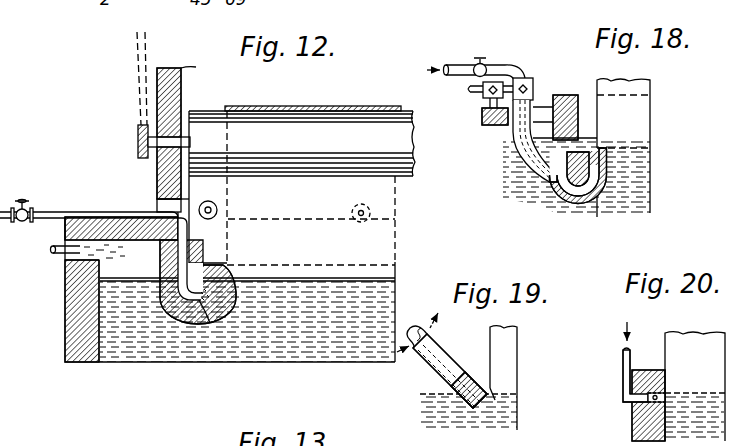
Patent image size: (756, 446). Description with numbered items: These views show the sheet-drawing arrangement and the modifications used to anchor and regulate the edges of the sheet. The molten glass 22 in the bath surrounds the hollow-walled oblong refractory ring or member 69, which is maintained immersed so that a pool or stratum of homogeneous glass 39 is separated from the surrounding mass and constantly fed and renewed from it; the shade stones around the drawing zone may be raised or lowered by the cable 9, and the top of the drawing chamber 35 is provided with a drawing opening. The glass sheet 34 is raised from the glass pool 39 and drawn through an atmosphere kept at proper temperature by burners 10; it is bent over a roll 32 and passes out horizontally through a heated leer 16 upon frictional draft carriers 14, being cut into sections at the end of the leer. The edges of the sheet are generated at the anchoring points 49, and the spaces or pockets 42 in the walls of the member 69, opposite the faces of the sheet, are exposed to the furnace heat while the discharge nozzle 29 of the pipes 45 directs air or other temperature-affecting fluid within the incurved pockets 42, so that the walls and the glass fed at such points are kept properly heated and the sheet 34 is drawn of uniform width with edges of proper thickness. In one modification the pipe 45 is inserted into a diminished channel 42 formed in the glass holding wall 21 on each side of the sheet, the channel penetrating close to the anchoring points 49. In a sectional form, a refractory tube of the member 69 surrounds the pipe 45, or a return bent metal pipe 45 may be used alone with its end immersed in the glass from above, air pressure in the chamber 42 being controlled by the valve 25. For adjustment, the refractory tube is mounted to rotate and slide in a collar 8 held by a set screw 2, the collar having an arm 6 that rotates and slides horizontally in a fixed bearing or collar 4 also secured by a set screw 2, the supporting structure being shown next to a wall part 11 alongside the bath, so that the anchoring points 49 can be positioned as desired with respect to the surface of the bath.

In FIG. 18, the set screw 2 is at (538, 62).
In FIG. 18, the fixed bearing or collar 4 is at (483, 98).
In FIG. 18, the arm 6 is at (471, 88).
In FIG. 18, the collar 8 is at (507, 77).
In FIG. 18, the cable 9 is at (563, 95).
In FIG. 12, the burners 10 is at (372, 213).
In FIG. 18, the support wall 11 is at (575, 95).
In FIG. 12, the frictional draft carrier 14 is at (52, 252).
In FIG. 12, the leer 16 is at (183, 86).
In FIG. 12, the glass holding wall 21 is at (68, 328).
In FIG. 20, the glass holding wall 21 is at (628, 405).
In FIG. 12, the molten glass 22 is at (383, 290).
In FIG. 18, the molten glass 22 is at (530, 168).
In FIG. 19, the molten glass 22 is at (517, 419).
In FIG. 12, the valve 25 is at (23, 201).
In FIG. 18, the valve 25 is at (479, 57).
In FIG. 12, the discharge nozzle 29 is at (190, 320).
In FIG. 12, the roll 32 is at (364, 120).
In FIG. 12, the glass sheet 34 is at (389, 187).
In FIG. 18, the glass sheet 34 is at (642, 112).
In FIG. 19, the glass sheet 34 is at (520, 377).
In FIG. 20, the glass sheet 34 is at (732, 325).
In FIG. 12, the top of the drawing chamber 35 is at (65, 229).
In FIG. 18, the top of the drawing chamber 35 is at (482, 119).
In FIG. 12, the glass pool 39 is at (312, 293).
In FIG. 12, the pocket or channel 42 is at (212, 323).
In FIG. 18, the pocket or channel 42 is at (603, 158).
In FIG. 20, the pocket or channel 42 is at (633, 400).
In FIG. 12, the pipe 45 is at (60, 212).
In FIG. 18, the pipe 45 is at (570, 198).
In FIG. 19, the pipe 45 is at (462, 402).
In FIG. 20, the pipe 45 is at (622, 359).
In FIG. 12, the anchoring points 49 is at (229, 274).
In FIG. 18, the anchoring points 49 is at (636, 151).
In FIG. 19, the anchoring points 49 is at (492, 395).
In FIG. 20, the anchoring points 49 is at (667, 392).
In FIG. 18, the hollow-walled oblong refractory ring or member 69 is at (512, 133).
In FIG. 19, the hollow-walled oblong refractory ring or member 69 is at (432, 366).